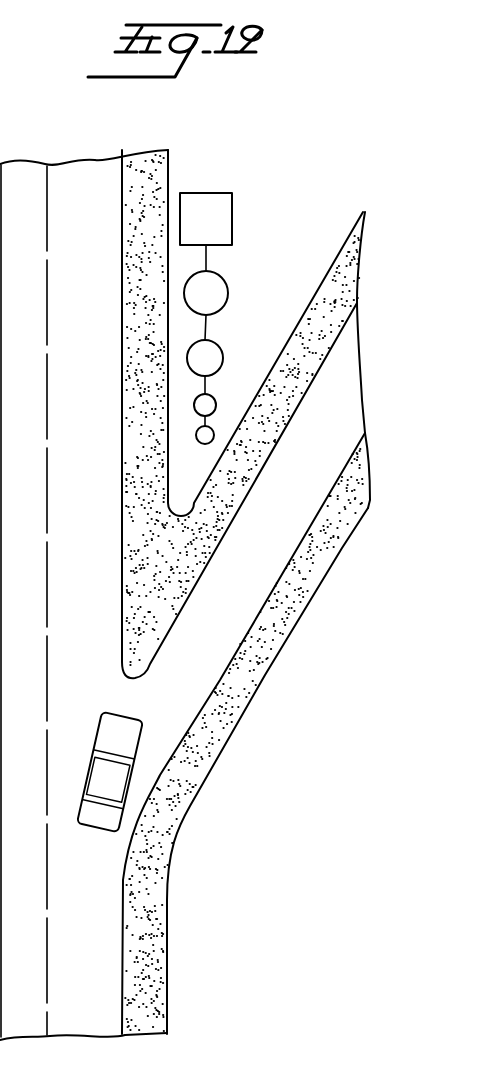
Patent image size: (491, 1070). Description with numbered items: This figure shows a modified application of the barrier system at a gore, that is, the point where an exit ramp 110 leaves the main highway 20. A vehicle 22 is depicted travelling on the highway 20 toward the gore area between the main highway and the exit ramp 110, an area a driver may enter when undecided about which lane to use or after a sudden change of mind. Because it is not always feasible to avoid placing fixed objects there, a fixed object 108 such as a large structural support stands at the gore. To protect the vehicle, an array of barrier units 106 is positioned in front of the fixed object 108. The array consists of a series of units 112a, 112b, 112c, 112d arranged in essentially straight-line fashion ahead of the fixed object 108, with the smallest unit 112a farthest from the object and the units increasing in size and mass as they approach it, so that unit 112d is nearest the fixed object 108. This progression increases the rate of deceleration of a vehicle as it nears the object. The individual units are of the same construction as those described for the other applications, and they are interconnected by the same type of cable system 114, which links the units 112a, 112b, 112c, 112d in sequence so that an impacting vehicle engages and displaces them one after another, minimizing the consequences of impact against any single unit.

The highway 20 is at (82, 178).
The vehicle 22 is at (133, 733).
The array of barrier units 106 is at (193, 334).
The fixed object 108 is at (232, 216).
The exit ramp 110 is at (263, 583).
The unit 112a is at (205, 444).
The unit 112b is at (208, 405).
The unit 112c is at (214, 354).
The unit 112d is at (218, 295).
The cable system 114 is at (208, 328).